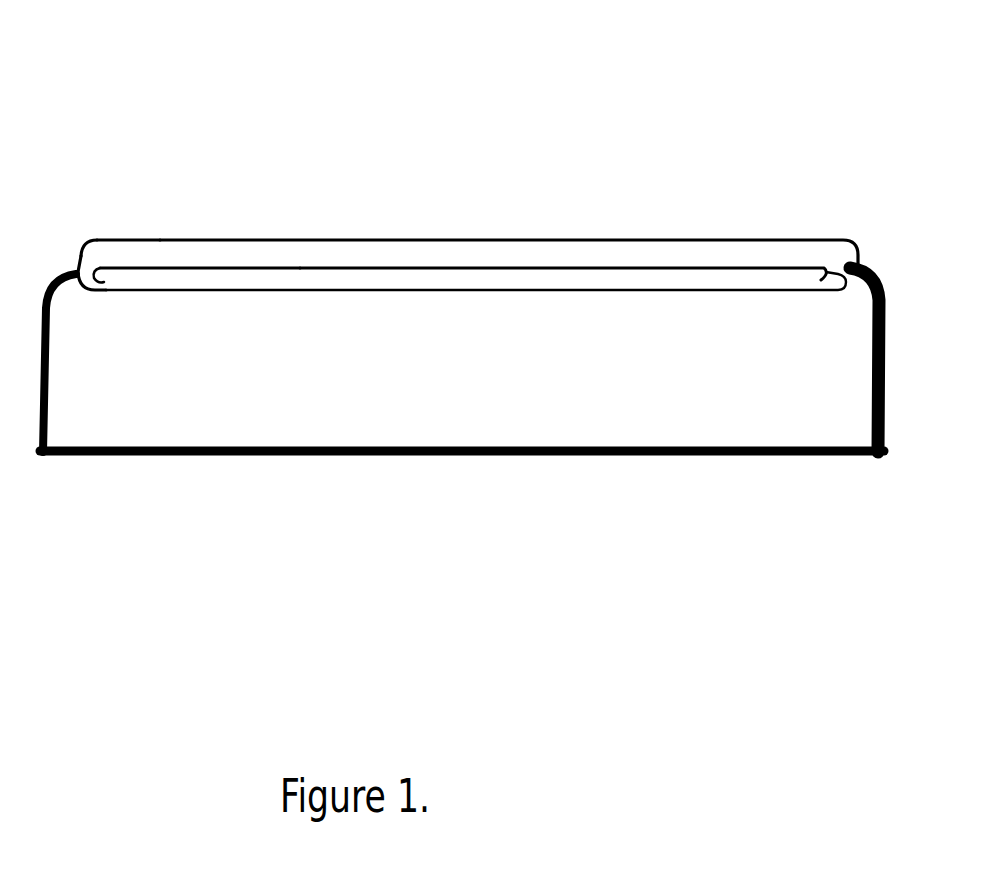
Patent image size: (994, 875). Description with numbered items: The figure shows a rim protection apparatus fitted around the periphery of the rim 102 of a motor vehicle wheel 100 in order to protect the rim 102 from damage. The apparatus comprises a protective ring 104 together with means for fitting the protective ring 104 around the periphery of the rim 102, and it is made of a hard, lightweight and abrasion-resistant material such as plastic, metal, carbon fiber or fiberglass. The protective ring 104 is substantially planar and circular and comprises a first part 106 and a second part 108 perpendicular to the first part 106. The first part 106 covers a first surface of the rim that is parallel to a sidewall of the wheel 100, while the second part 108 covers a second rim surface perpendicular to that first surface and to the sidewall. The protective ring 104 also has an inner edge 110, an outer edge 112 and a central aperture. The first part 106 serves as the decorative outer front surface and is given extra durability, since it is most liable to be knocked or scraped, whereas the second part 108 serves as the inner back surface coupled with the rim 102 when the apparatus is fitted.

The motor vehicle wheel 100 is at (452, 367).
The rim 102 is at (637, 282).
The protective ring 104 is at (403, 260).
The first part 106 is at (317, 238).
The second part 108 is at (198, 263).
The inner edge 110 is at (163, 237).
The outer edge 112 is at (82, 262).